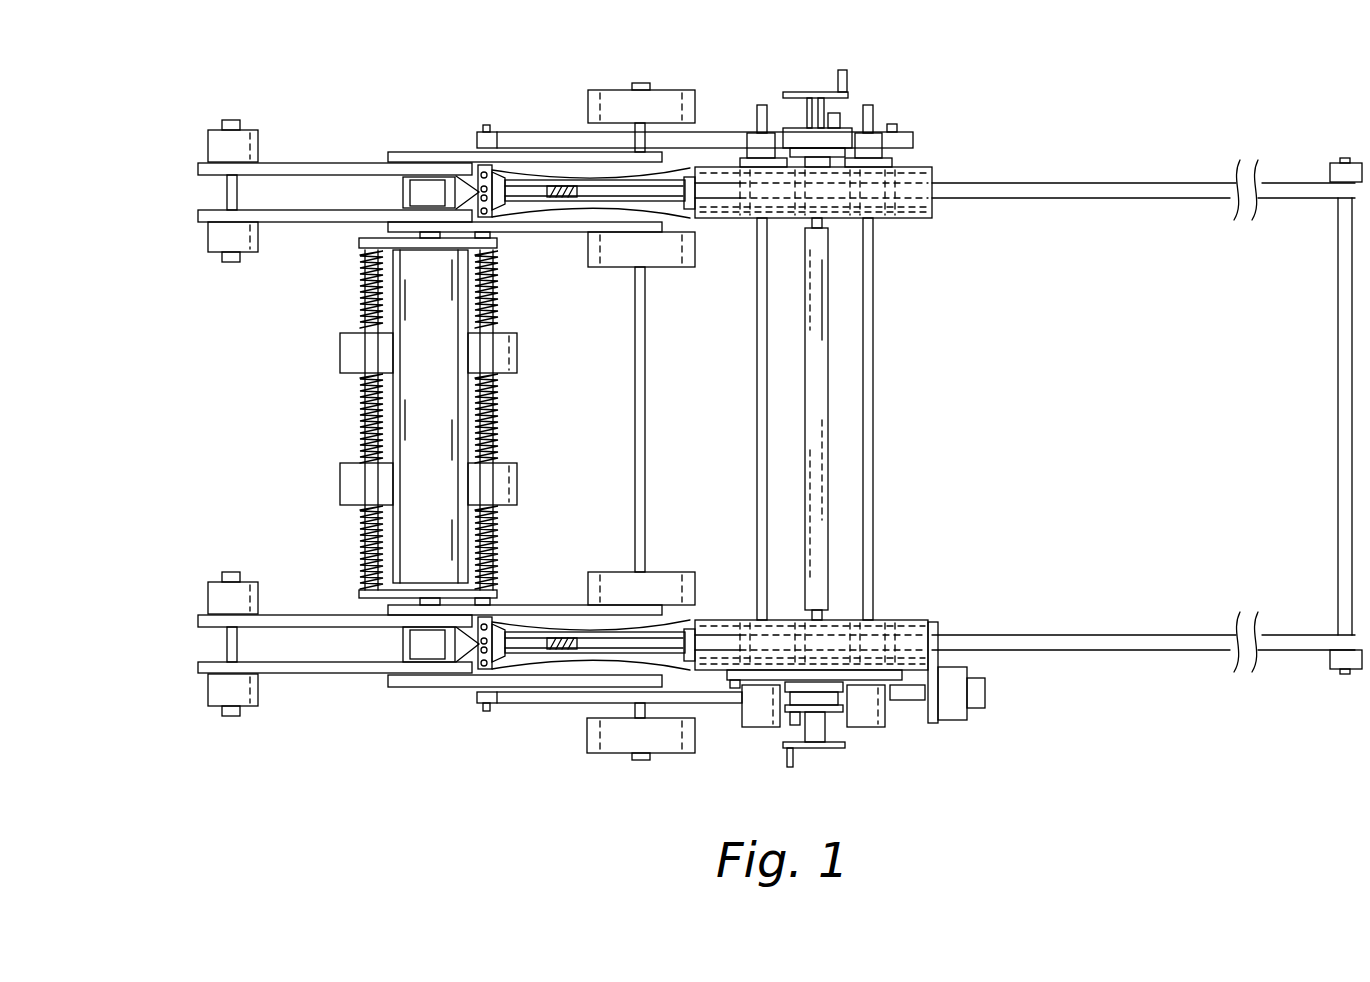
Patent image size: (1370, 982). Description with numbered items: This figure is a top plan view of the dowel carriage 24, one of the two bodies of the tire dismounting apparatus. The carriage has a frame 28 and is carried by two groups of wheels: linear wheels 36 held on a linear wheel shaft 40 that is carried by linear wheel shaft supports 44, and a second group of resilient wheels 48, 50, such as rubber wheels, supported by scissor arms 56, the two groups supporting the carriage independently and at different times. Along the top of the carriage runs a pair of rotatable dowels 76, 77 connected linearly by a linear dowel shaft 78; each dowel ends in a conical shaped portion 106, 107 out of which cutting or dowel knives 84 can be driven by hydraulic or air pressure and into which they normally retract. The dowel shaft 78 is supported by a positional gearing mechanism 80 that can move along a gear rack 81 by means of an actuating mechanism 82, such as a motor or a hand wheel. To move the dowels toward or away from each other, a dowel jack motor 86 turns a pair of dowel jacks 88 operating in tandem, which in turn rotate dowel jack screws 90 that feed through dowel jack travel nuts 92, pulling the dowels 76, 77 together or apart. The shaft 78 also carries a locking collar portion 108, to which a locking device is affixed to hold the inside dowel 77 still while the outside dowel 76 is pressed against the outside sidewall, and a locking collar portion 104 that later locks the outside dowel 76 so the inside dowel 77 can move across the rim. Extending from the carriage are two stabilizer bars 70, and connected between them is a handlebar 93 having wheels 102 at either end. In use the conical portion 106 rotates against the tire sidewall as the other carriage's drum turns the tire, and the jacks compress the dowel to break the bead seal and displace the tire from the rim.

The dowel carriage 24 is at (1010, 88).
The frame 28 is at (446, 150).
The linear wheels 36 is at (340, 351).
The linear wheel shaft 40 is at (360, 296).
The linear wheel shaft support 44 is at (360, 243).
The resilient wheel 48 is at (212, 150).
The resilient wheel 50 is at (590, 92).
The scissor arms 56 is at (401, 150).
The stabilizer bars 70 is at (1160, 183).
The outside dowel 76 is at (696, 618).
The inside dowel 77 is at (887, 224).
The linear dowel shaft 78 is at (830, 438).
The positional gearing mechanism 80 is at (846, 138).
The gear rack 81 is at (712, 132).
The actuating mechanism 82 is at (841, 88).
The dowel knives 84 is at (494, 165).
The dowel jack motor 86 is at (985, 680).
The dowel jacks 88 is at (757, 727).
The dowel jack screws 90 is at (757, 418).
The dowel jack travel nuts 92 is at (742, 158).
The handlebar 93 is at (1322, 501).
The wheels 102 is at (1336, 165).
The locking collar portion 104 is at (823, 618).
The conical shaped portion 106 is at (550, 650).
The conical shaped portion 107 is at (625, 208).
The locking collar portion 108 is at (820, 220).